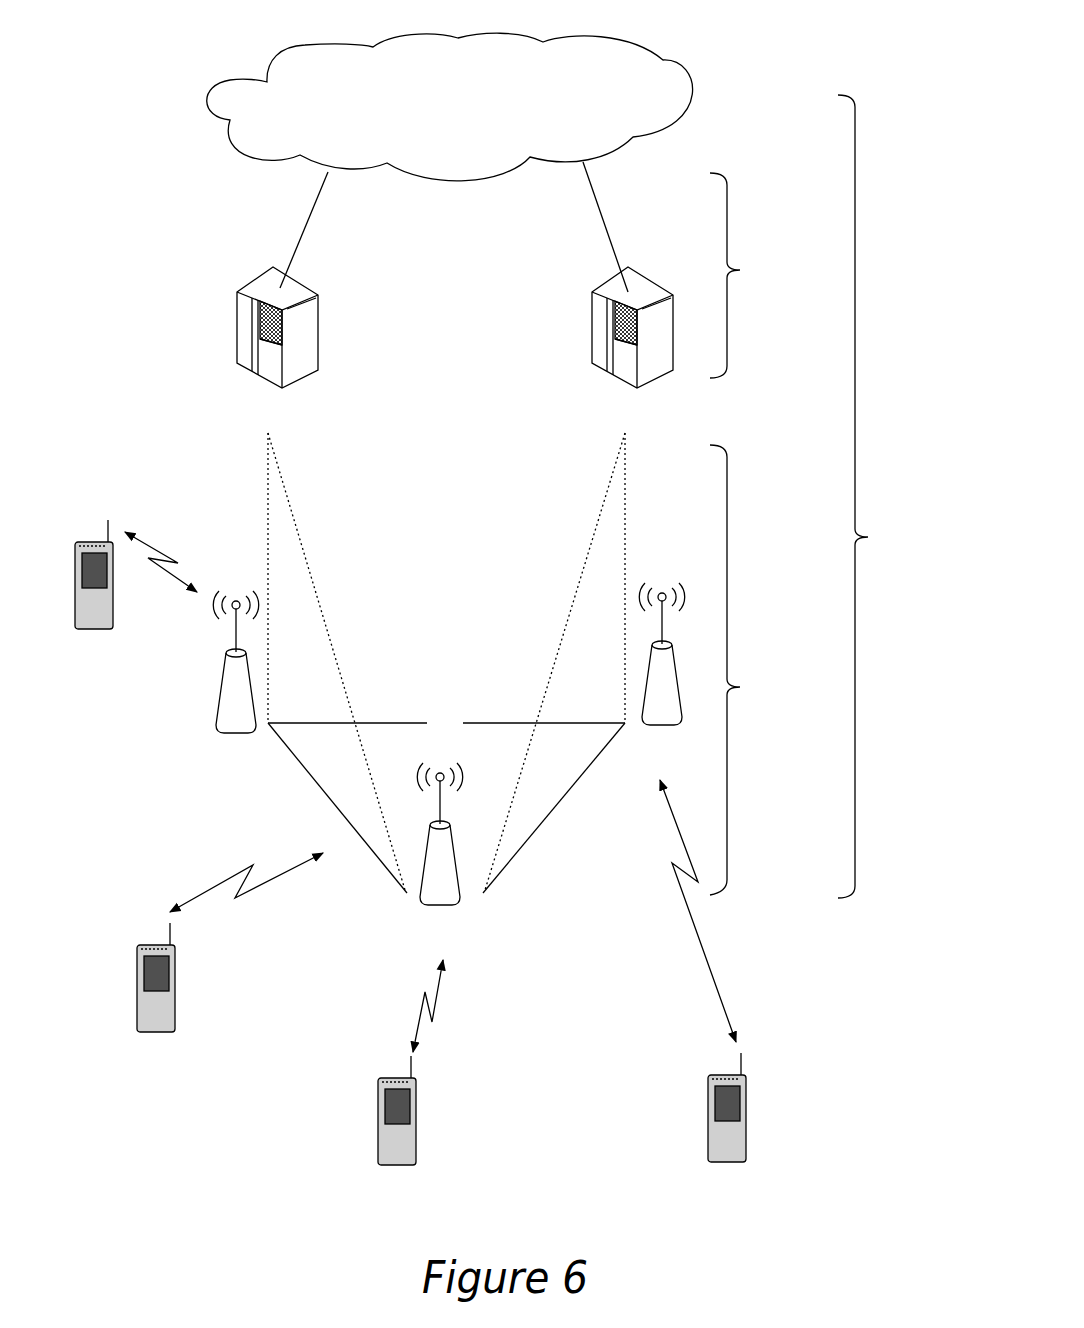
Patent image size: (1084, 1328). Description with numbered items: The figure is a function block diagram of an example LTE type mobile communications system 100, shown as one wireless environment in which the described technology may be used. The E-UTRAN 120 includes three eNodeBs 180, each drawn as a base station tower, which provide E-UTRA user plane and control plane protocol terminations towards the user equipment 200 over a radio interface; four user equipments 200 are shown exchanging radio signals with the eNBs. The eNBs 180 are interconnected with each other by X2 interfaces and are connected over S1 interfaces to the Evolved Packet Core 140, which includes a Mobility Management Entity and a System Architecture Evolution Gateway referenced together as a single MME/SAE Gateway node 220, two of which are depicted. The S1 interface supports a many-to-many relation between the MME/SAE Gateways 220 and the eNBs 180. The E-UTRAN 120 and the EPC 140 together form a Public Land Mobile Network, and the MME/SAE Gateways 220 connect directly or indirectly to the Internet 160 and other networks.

The LTE system 100 is at (141, 297).
The E-UTRAN 120 is at (780, 670).
The Evolved Packet Core 140 is at (746, 275).
The Internet 160 is at (662, 62).
The eNodeB 180 is at (228, 695).
The user equipment 200 is at (83, 542).
The MME/SAE Gateway 220 is at (308, 333).